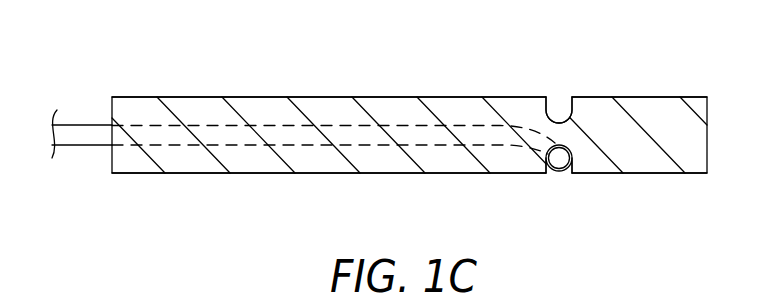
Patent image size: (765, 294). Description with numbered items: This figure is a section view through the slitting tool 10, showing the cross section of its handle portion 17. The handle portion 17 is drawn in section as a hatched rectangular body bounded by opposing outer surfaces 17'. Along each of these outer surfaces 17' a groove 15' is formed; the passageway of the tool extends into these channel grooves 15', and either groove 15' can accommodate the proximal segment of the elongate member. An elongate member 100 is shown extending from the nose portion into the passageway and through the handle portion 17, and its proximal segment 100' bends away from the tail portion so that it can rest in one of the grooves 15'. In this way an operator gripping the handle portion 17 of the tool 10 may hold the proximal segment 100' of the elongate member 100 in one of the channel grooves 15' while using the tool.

The slitting tool 10 is at (637, 73).
The handle portion 17 is at (409, 108).
The outer surfaces 17' is at (409, 144).
The grooves 15' is at (579, 131).
The elongate member 100 is at (297, 152).
The proximal segment 100' is at (541, 189).